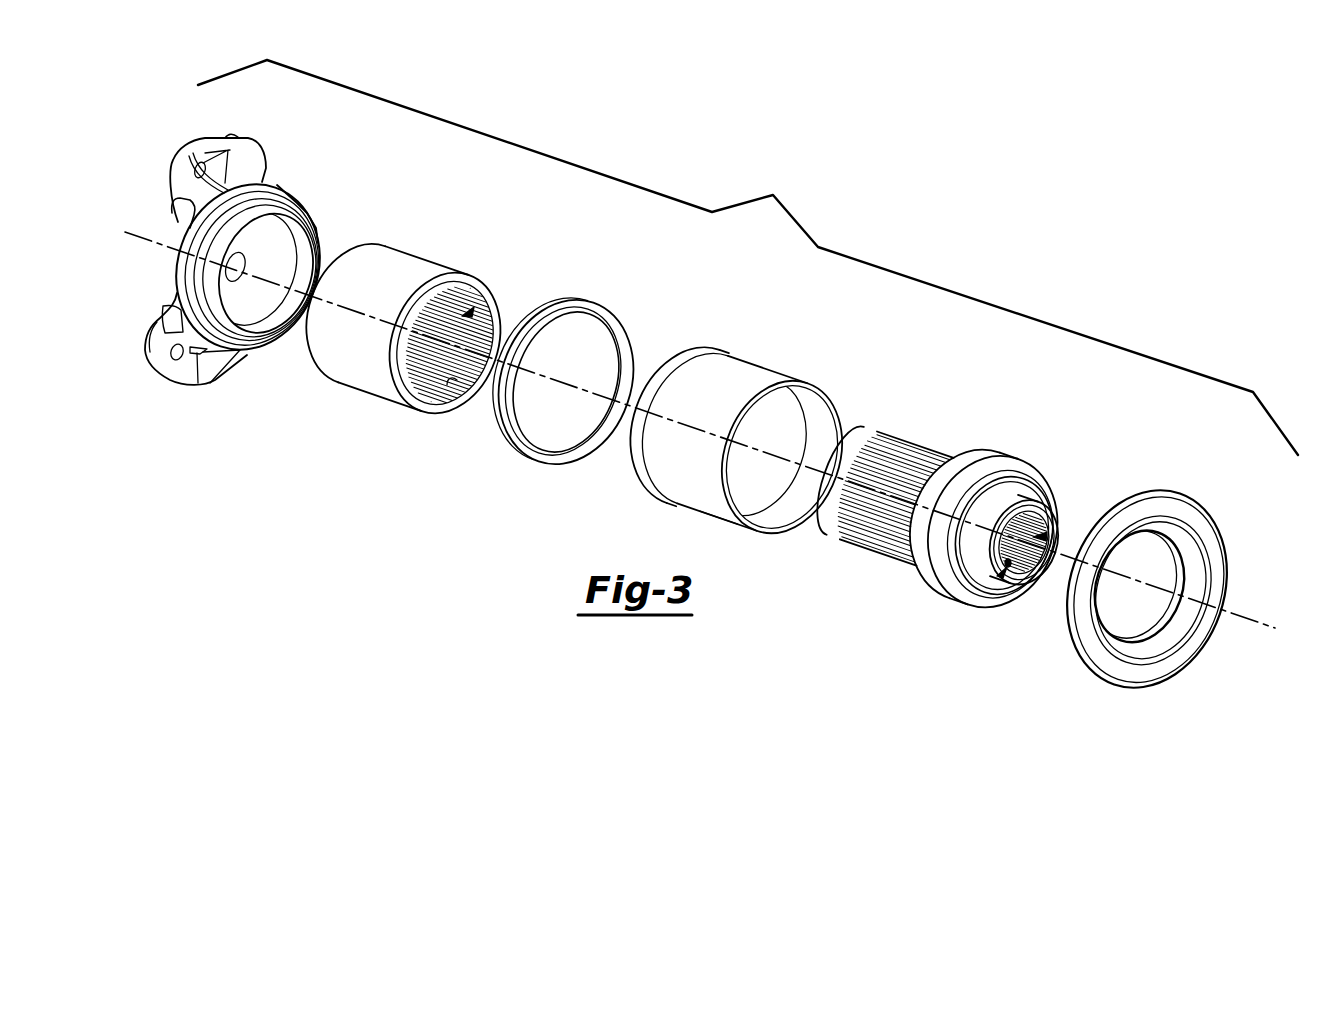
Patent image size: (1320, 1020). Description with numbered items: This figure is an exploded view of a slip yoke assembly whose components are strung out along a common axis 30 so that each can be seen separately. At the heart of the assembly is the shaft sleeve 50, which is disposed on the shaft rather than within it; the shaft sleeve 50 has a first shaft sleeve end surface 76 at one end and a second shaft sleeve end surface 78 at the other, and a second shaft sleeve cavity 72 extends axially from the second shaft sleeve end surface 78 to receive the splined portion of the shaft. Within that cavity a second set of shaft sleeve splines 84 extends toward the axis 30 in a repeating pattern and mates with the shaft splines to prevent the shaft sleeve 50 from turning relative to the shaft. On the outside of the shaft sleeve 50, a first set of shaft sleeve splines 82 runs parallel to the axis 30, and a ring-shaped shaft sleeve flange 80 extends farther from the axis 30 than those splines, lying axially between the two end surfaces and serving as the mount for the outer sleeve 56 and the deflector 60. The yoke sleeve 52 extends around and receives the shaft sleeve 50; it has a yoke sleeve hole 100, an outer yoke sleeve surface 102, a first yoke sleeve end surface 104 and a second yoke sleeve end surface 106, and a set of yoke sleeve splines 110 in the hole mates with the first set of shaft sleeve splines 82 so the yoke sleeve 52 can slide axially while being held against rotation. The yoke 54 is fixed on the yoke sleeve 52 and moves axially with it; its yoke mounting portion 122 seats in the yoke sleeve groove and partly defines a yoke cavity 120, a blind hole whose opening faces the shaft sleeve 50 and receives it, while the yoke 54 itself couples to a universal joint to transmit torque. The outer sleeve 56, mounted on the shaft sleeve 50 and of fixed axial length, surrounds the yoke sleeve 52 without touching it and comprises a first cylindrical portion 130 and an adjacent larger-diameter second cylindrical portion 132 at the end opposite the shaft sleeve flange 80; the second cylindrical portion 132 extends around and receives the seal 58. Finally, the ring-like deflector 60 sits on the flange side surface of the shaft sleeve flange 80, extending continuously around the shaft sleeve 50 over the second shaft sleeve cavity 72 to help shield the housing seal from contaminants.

The axis 30 is at (1232, 607).
The shaft sleeve 50 is at (985, 467).
The yoke sleeve 52 is at (425, 258).
The yoke 54 is at (231, 140).
The outer sleeve 56 is at (767, 368).
The seal 58 is at (580, 455).
The deflector 60 is at (1208, 637).
The second shaft sleeve cavity 72 is at (1046, 537).
The first shaft sleeve end surface 76 is at (880, 440).
The second shaft sleeve end surface 78 is at (1033, 577).
The shaft sleeve flange 80 is at (1000, 458).
The first set of shaft sleeve splines 82 is at (875, 545).
The second set of shaft sleeve splines 84 is at (1005, 570).
The yoke sleeve hole 100 is at (470, 312).
The outer yoke sleeve surface 102 is at (365, 360).
The first yoke sleeve end surface 104 is at (342, 255).
The second yoke sleeve end surface 106 is at (473, 280).
The set of yoke sleeve splines 110 is at (447, 385).
The yoke cavity 120 is at (253, 290).
The yoke mounting portion 122 is at (317, 232).
The first cylindrical portion 130 is at (712, 513).
The second cylindrical portion 132 is at (648, 478).